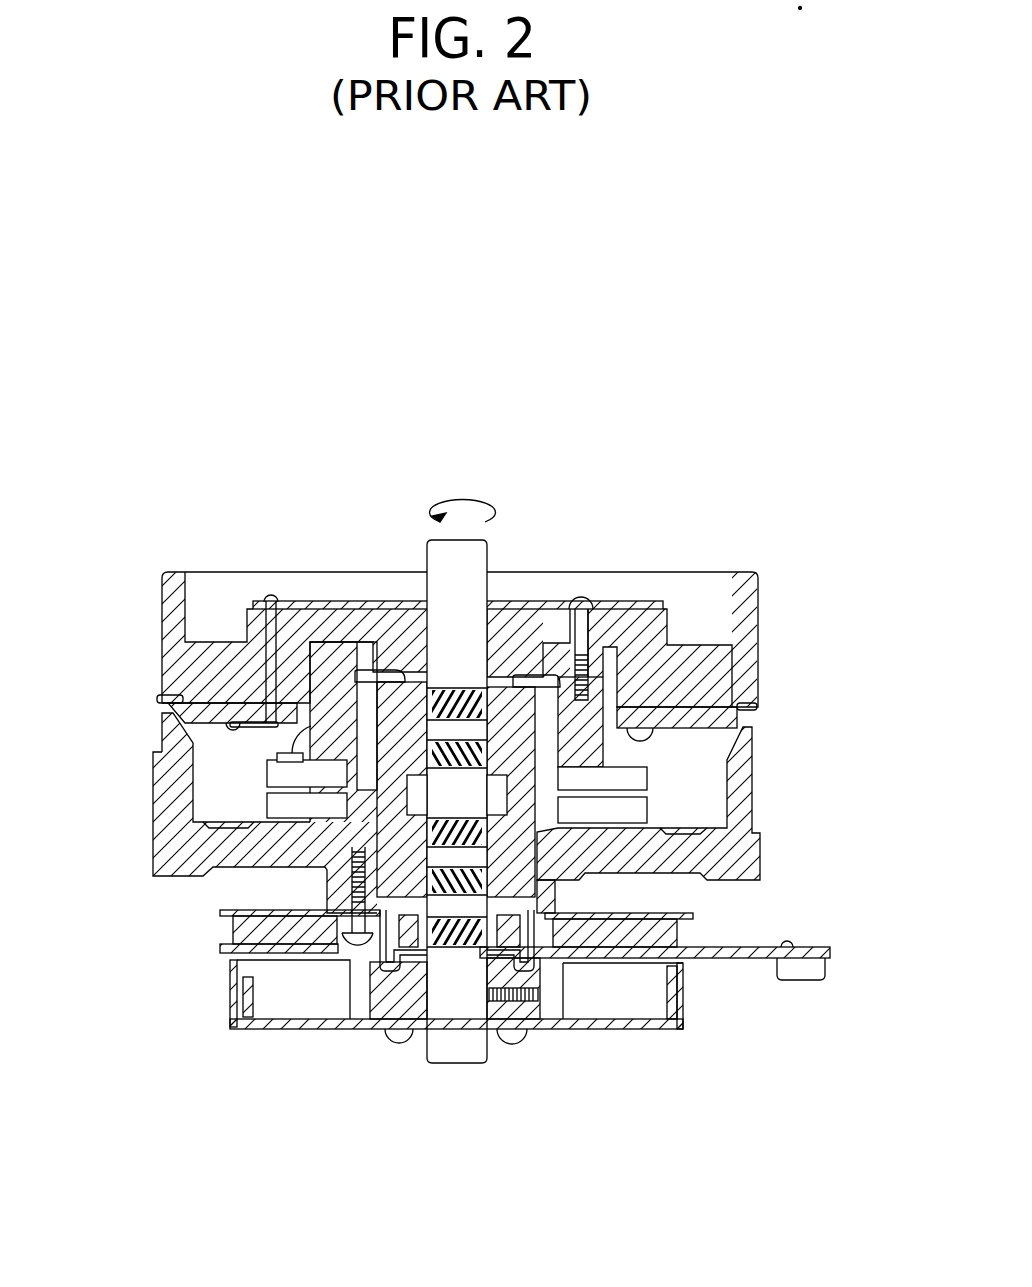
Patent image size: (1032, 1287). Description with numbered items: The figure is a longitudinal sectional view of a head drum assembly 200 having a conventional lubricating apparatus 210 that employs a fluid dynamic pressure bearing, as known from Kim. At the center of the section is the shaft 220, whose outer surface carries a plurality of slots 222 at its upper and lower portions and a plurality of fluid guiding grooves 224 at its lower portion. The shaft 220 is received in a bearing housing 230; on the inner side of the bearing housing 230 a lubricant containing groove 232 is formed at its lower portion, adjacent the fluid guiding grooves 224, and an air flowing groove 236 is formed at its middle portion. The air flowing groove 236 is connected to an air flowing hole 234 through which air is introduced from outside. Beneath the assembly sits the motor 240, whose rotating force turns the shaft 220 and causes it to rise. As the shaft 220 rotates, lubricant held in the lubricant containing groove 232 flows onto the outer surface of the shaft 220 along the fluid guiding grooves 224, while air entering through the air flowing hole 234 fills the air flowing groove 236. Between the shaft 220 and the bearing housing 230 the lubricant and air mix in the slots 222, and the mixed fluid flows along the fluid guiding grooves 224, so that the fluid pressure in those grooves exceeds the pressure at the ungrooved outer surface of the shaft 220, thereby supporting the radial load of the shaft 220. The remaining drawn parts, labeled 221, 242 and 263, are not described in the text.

The head drum assembly 200 is at (486, 333).
The apparatus 210 is at (333, 690).
The shaft 220 is at (420, 672).
The flange plate 221 is at (745, 706).
The slots 222 is at (516, 634).
The fluid guiding grooves 224 is at (408, 676).
The bearing housing 230 is at (538, 674).
The lubricant containing groove 232 is at (511, 908).
The air flowing hole 234 is at (521, 786).
The air flowing groove 236 is at (497, 812).
The motor 240 is at (688, 1016).
The flexible circuit board 242 is at (677, 940).
The bearing sleeve 263 is at (372, 706).